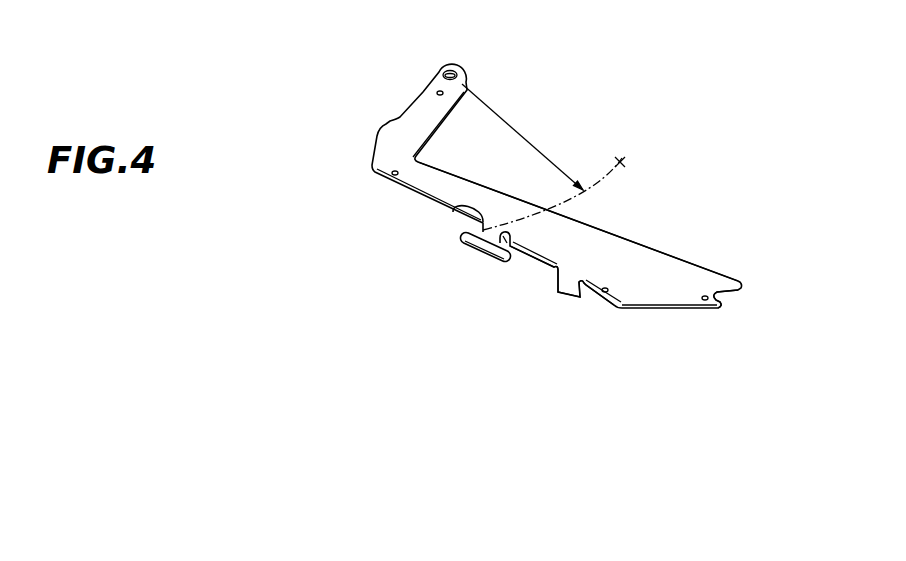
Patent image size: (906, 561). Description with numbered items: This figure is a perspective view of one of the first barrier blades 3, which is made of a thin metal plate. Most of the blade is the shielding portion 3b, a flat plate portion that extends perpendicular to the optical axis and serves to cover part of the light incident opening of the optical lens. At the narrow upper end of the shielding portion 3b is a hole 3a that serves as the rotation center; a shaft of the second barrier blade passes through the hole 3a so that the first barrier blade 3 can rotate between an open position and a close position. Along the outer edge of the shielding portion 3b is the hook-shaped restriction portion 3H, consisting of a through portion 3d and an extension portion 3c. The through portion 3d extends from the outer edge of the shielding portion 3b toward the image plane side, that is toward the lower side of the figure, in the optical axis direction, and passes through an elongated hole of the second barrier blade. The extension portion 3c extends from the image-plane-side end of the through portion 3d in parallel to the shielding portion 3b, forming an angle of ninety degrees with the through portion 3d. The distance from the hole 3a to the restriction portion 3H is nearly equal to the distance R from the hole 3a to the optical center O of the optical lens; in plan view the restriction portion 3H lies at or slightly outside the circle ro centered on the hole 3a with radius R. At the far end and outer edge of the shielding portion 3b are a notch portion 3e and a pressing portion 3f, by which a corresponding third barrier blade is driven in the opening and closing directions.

The first barrier blade 3 is at (634, 99).
The hole 3a is at (450, 70).
The shielding portion 3b is at (628, 258).
The extension portion 3c is at (471, 250).
The through portion 3d is at (452, 212).
The notch portion 3e is at (723, 302).
The pressing portion 3f is at (521, 258).
The restriction portion 3H is at (372, 203).
The distance (radius) R is at (522, 137).
The optical center O is at (635, 157).
The circle ro is at (603, 181).